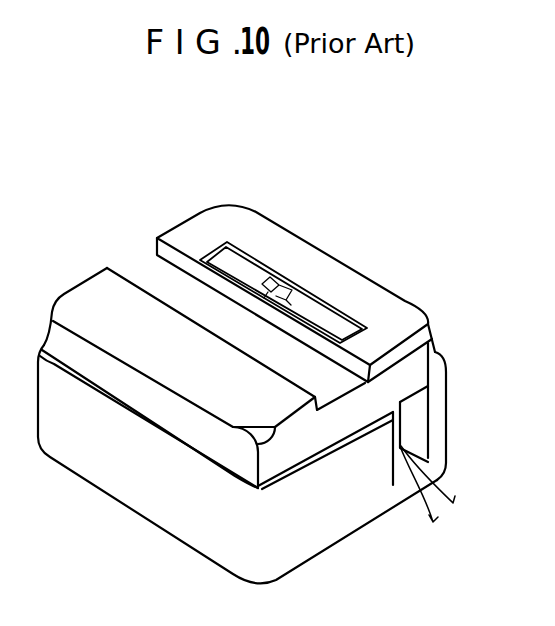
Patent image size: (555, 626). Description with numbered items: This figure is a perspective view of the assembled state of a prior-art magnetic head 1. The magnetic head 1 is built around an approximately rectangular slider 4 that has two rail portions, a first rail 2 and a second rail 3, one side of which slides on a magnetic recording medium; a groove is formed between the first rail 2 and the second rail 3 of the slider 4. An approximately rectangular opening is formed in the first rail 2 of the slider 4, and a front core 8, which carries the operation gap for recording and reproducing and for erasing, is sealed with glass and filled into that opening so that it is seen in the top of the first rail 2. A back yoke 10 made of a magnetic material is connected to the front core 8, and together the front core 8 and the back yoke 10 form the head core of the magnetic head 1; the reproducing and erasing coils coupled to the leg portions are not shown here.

The magnetic head 1 is at (394, 158).
The first rail 2 is at (196, 233).
The second rail 3 is at (89, 300).
The slider 4 is at (405, 294).
The front core 8 is at (322, 315).
The back yoke 10 is at (451, 379).